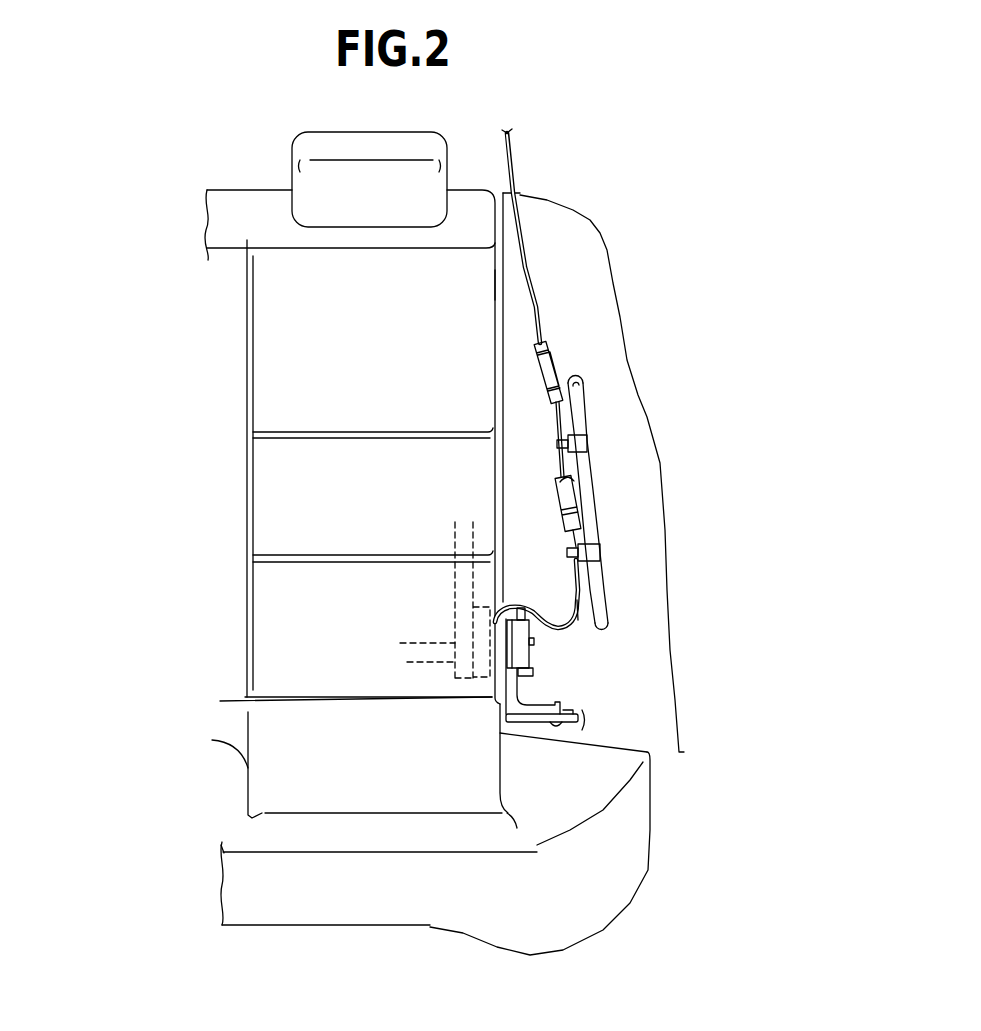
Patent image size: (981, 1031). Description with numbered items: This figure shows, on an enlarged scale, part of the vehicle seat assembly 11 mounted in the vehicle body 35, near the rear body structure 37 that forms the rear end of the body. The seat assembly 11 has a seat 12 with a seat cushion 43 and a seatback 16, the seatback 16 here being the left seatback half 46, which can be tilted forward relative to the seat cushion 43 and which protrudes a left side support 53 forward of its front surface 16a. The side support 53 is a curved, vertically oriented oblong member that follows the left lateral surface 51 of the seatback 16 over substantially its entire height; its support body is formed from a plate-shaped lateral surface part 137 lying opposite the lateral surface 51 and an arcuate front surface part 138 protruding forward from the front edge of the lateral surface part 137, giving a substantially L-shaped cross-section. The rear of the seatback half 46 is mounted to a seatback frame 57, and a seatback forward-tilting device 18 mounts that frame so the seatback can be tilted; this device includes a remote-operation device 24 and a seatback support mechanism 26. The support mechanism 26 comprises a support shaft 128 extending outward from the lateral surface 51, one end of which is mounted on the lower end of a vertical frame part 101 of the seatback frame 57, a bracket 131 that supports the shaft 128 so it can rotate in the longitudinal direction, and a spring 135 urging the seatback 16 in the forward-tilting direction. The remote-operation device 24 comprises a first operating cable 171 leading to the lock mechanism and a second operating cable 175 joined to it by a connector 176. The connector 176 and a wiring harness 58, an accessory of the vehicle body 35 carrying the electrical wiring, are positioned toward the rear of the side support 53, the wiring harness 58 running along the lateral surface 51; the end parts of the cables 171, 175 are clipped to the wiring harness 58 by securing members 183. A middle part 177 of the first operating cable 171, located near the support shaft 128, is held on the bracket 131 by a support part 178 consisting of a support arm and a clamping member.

The vehicle seat assembly 11 is at (167, 221).
The seat 12 is at (284, 811).
The seatback 16 is at (304, 762).
The left seatback half 46 is at (270, 769).
The front surface of the seatback 16a is at (334, 638).
The seatback forward-tilting device 18 is at (534, 752).
The remote-operation device 24 is at (527, 157).
The seatback support mechanism 26 is at (656, 691).
The vehicle body 35 is at (573, 850).
The rear body structure 37 is at (570, 730).
The seat cushion 43 is at (314, 883).
The lateral surface of the seatback 51 is at (497, 283).
The left side support 53 is at (504, 472).
The seatback frame 57 is at (407, 665).
The wiring harness 58 is at (585, 410).
The vertical frame part 101 is at (455, 678).
The support shaft 128 is at (502, 645).
The bracket 131 is at (555, 700).
The spring 135 is at (530, 655).
The lateral surface part 137 is at (533, 373).
The front surface part 138 is at (516, 312).
The first operating cable 171 is at (580, 628).
The second operating cable 175 is at (525, 245).
The connector 176 is at (573, 495).
The middle part of the first operating cable 177 is at (542, 605).
The support part 178 is at (505, 607).
The securing member 183 is at (577, 448).